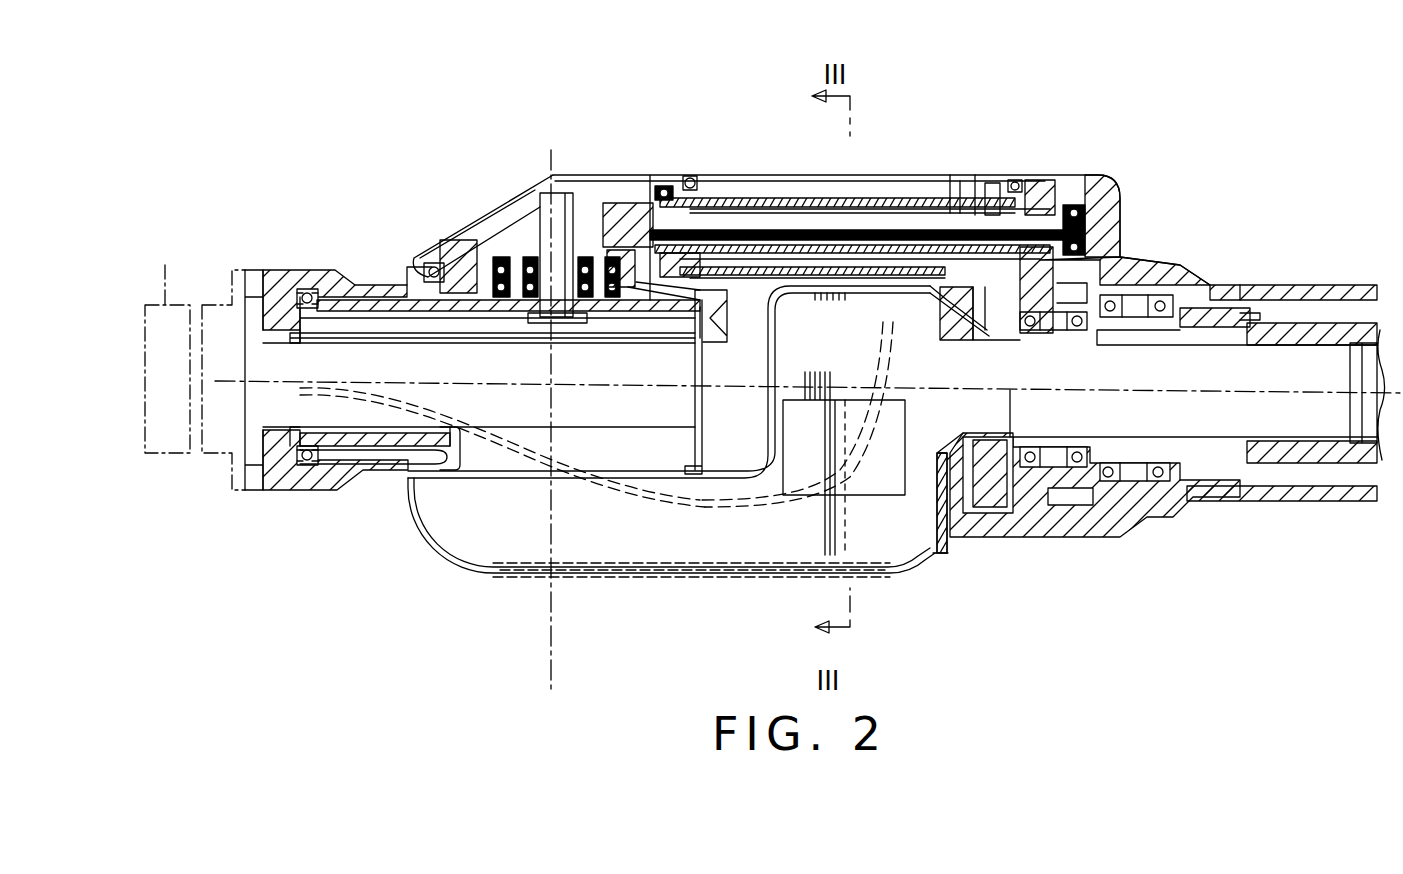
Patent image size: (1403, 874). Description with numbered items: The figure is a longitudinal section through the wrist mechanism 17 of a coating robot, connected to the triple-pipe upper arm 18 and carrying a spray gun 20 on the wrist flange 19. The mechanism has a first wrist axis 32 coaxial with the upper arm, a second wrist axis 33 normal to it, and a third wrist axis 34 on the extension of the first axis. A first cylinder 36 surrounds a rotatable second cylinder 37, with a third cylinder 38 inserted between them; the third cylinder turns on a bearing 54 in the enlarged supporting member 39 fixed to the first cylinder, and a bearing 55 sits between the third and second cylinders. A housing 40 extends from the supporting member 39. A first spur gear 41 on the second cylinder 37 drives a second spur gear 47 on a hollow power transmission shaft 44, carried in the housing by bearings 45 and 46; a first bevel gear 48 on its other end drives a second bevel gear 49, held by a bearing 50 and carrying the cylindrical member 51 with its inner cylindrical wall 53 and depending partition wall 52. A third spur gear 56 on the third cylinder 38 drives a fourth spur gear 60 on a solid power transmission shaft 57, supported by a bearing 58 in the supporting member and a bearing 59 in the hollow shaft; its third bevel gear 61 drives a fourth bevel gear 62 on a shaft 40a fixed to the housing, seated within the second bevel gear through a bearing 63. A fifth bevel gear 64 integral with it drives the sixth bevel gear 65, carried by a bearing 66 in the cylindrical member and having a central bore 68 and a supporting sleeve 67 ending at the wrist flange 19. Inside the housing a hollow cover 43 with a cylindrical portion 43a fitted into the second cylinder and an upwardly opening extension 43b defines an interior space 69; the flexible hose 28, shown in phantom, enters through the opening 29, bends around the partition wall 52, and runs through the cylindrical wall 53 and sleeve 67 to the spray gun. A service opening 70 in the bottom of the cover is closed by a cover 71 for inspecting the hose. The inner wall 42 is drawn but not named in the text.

The wrist mechanism 17 is at (664, 88).
The upper arm 18 is at (1285, 204).
The wrist flange 19 is at (258, 270).
The spray gun 20 is at (195, 362).
The flexible hose 28 is at (665, 500).
The opening 29 is at (895, 478).
The first wrist axis 32 is at (1012, 386).
The second wrist axis 33 is at (548, 165).
The third wrist axis 34 is at (310, 385).
The first cylinder 36 is at (1235, 285).
The second cylinder 37 is at (1215, 340).
The third cylinder 38 is at (1260, 300).
The supporting member 39 is at (1112, 190).
The housing 40 is at (790, 177).
The shaft 40a is at (540, 214).
The first spur gear 41 is at (985, 326).
The inner wall 42 is at (742, 300).
The cover 43 is at (758, 402).
The cylindrical portion 43a is at (987, 432).
The extension 43b is at (465, 566).
The hollow power transmission shaft 44 is at (855, 200).
The bearing 45 is at (957, 178).
The bearing 46 is at (706, 186).
The second spur gear 47 is at (995, 183).
The first bevel gear 48 is at (698, 176).
The second bevel gear 49 is at (662, 305).
The bearing 50 is at (408, 266).
The cylindrical member 51 is at (352, 276).
The partition wall 52 is at (688, 414).
The inner cylindrical wall 53 is at (435, 362).
The bearing 54 is at (1122, 306).
The bearing 55 is at (1075, 331).
The third spur gear 56 is at (1068, 285).
The solid power transmission shaft 57 is at (905, 228).
The bearing 58 is at (1078, 204).
The bearing 59 is at (666, 186).
The fourth spur gear 60 is at (1040, 182).
The third bevel gear 61 is at (620, 188).
The fourth bevel gear 62 is at (590, 180).
The bearing 63 is at (600, 316).
The fifth bevel gear 64 is at (470, 317).
The sixth bevel gear 65 is at (398, 319).
The bearing 66 is at (306, 290).
The supporting sleeve 67 is at (312, 330).
The central bore 68 is at (350, 319).
The interior space 69 is at (693, 533).
The service opening 70 is at (747, 562).
The cover 71 is at (703, 577).